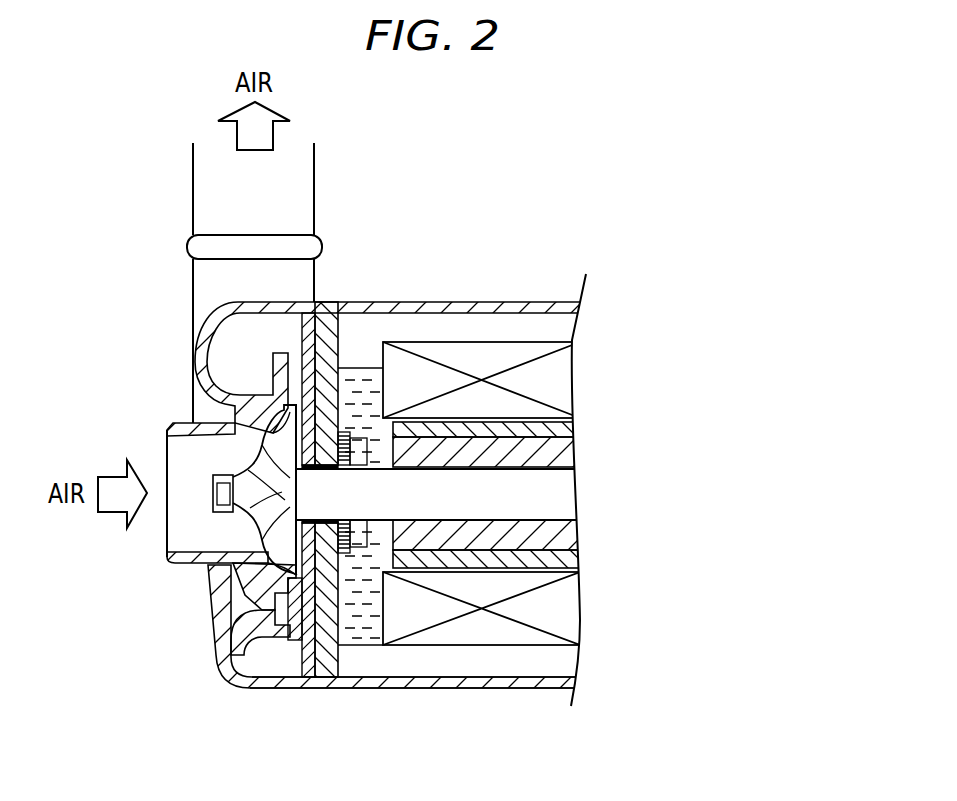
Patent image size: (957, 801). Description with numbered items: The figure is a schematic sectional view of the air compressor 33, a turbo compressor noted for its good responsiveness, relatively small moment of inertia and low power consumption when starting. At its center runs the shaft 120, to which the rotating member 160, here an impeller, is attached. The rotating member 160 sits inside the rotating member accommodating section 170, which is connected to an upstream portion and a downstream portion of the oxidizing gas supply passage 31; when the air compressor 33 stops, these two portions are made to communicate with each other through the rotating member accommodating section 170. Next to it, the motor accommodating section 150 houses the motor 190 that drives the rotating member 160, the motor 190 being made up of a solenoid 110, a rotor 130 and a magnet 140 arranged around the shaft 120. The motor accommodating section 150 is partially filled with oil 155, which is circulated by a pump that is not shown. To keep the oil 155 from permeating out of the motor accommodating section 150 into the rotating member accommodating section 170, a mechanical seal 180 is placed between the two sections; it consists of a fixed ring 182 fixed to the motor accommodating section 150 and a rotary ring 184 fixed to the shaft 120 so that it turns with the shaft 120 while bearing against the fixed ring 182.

The oxidizing gas supply passage 31 is at (193, 190).
The air compressor 33 is at (466, 181).
The solenoid 110 is at (566, 378).
The shaft 120 is at (553, 497).
The rotor 130 is at (566, 450).
The magnet 140 is at (566, 430).
The motor accommodating section 150 is at (578, 303).
The oil 155 is at (378, 630).
The rotating member 160 is at (253, 507).
The rotating member accommodating section 170 is at (265, 688).
The mechanical seal 180 is at (410, 732).
The fixed ring 182 is at (341, 650).
The rotary ring 184 is at (357, 523).
The motor 190 is at (750, 342).